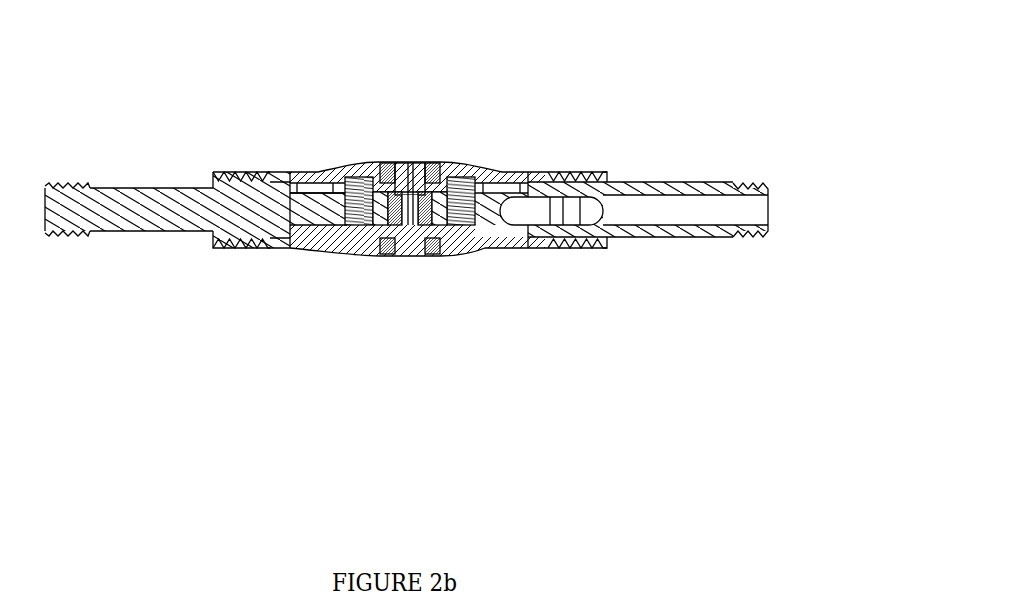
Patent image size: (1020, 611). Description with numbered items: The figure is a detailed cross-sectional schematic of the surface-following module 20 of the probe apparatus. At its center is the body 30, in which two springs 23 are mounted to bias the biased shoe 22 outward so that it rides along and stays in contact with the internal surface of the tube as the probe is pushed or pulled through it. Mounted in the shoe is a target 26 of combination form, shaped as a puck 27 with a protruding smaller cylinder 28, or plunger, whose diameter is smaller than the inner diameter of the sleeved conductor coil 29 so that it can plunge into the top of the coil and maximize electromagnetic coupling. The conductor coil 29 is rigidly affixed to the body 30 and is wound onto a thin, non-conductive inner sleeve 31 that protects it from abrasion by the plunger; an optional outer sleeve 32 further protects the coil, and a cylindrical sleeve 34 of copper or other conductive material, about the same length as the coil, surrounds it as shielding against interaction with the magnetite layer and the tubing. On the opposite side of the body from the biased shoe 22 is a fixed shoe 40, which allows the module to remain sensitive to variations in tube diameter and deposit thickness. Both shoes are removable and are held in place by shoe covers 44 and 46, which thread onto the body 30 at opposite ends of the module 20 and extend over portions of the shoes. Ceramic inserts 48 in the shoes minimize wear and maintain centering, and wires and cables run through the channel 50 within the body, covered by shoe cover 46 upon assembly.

The surface-following module 20 is at (593, 90).
The biased shoe 22 is at (465, 162).
The springs 23 is at (357, 168).
The target 26 is at (408, 160).
The puck 27 is at (413, 167).
The cylinder 28 is at (415, 168).
The conductor coil 29 is at (410, 258).
The body 30 is at (150, 188).
The inner sleeve 31 is at (393, 253).
The outer sleeve 32 is at (367, 253).
The cylindrical sleeve 34 is at (433, 228).
The fixed shoe 40 is at (469, 251).
The shoe cover 44 is at (273, 250).
The shoe cover 46 is at (577, 170).
The ceramic inserts 48 is at (383, 262).
The channel 50 is at (593, 210).